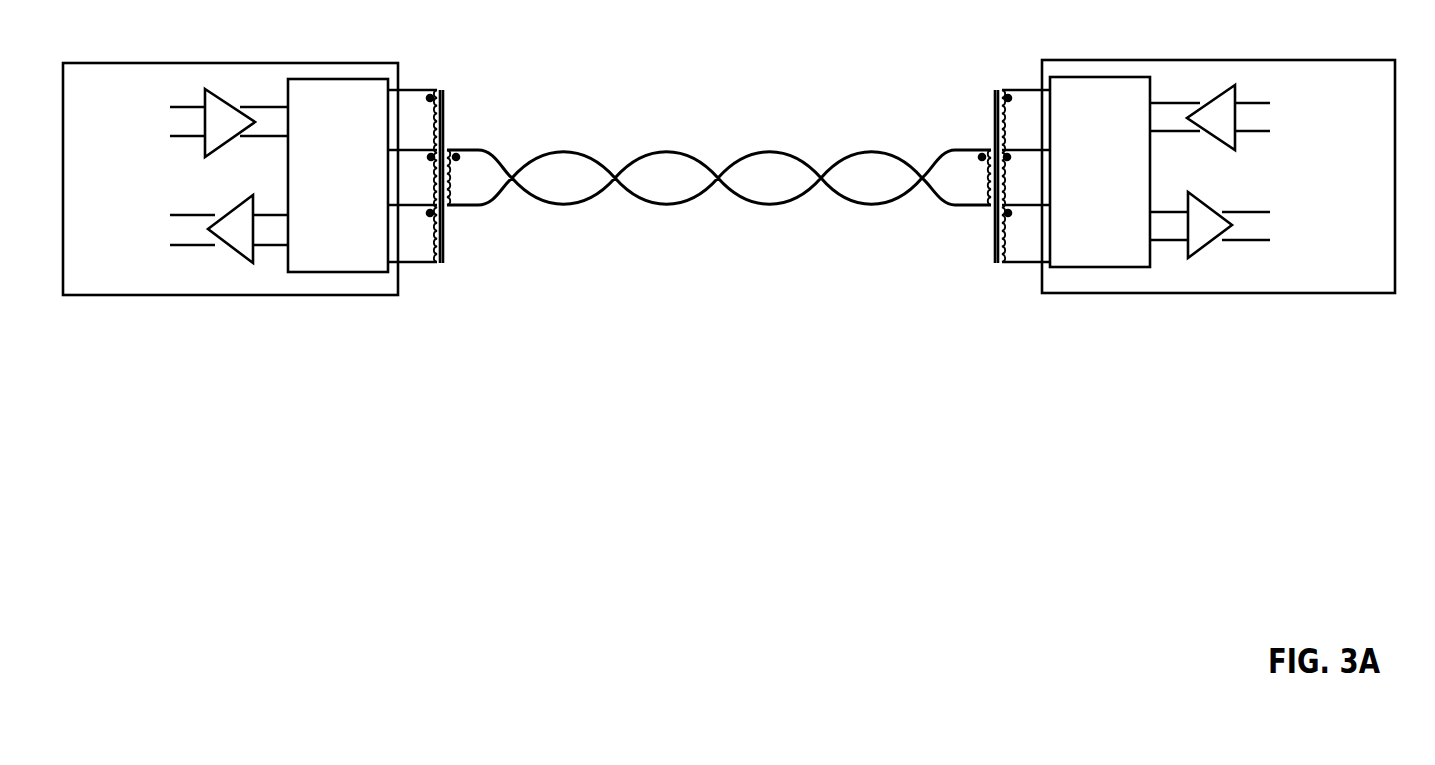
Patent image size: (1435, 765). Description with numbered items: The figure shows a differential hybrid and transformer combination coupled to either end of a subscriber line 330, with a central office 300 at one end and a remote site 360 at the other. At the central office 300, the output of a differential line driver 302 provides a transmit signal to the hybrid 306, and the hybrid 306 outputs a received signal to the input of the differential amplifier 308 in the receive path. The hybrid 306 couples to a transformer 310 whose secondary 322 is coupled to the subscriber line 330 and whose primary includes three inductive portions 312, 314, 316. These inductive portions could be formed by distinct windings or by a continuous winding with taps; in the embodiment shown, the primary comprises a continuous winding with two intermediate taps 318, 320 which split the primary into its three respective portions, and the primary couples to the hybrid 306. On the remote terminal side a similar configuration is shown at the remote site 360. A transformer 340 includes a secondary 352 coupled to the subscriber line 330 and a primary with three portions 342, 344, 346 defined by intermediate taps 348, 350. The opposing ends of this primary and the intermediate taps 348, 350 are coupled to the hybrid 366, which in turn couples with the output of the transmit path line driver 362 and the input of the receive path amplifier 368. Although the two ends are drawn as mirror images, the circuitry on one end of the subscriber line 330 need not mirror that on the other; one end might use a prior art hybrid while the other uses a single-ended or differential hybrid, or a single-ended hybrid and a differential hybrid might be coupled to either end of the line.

The central office 300 is at (165, 62).
The differential line driver 302 is at (222, 102).
The hybrid 306 is at (288, 148).
The differential amplifier 308 is at (242, 206).
The transformer 310 is at (427, 156).
The inductive portion 312 is at (442, 110).
The inductive portion 314 is at (442, 142).
The inductive portion 316 is at (440, 255).
The intermediate tap 318 is at (430, 152).
The intermediate tap 320 is at (430, 208).
The secondary 322 is at (452, 178).
The subscriber line 330 is at (666, 152).
The transformer 340 is at (984, 154).
The primary portion 342 is at (995, 108).
The primary portion 344 is at (995, 140).
The primary portion 346 is at (998, 252).
The intermediate tap 348 is at (1040, 138).
The intermediate tap 350 is at (1040, 203).
The secondary 352 is at (986, 178).
The remote site 360 is at (1270, 60).
The transmit path line driver 362 is at (1222, 96).
The hybrid 366 is at (1150, 145).
The receive path amplifier 368 is at (1206, 207).